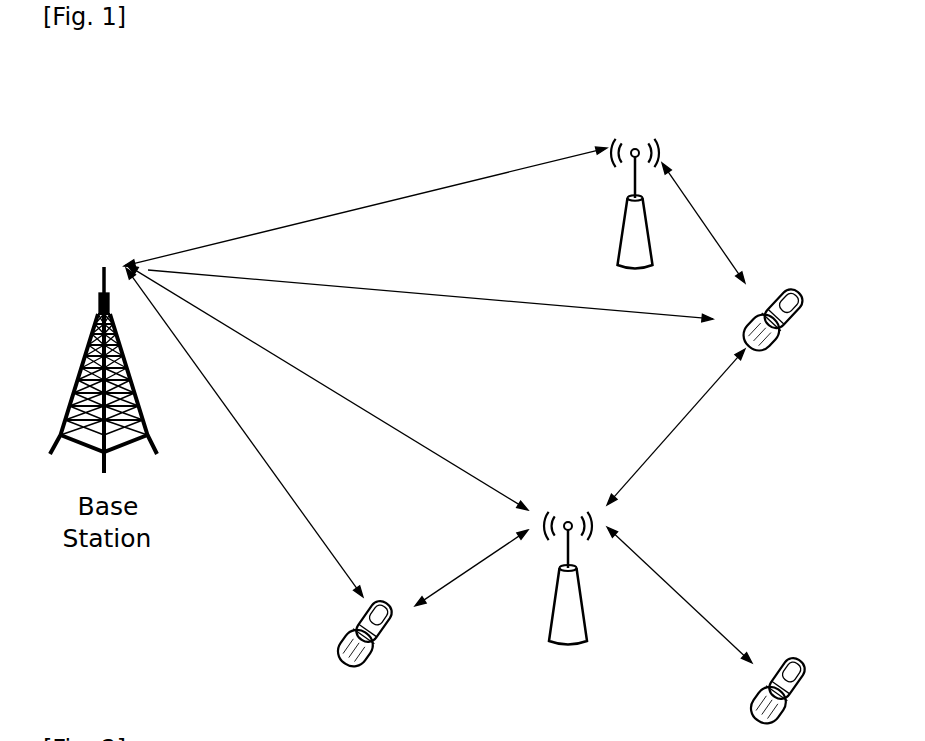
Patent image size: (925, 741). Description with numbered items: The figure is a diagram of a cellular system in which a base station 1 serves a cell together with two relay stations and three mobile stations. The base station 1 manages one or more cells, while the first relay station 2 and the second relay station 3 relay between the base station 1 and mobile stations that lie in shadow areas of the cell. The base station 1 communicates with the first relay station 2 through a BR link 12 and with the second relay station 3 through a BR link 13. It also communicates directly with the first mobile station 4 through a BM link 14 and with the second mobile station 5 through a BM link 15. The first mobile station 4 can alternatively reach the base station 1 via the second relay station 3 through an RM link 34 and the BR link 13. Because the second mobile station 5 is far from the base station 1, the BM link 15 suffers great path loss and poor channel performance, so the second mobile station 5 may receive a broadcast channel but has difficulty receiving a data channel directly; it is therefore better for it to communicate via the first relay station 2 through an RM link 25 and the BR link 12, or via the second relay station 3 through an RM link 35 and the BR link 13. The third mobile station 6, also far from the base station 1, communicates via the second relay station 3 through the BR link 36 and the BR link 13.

The base station 1 is at (104, 266).
The first relay station 2 is at (635, 137).
The second relay station 3 is at (569, 508).
The first mobile station 4 is at (384, 601).
The second mobile station 5 is at (788, 292).
The third mobile station 6 is at (794, 658).
The BR link 12 is at (313, 221).
The BR link 13 is at (445, 459).
The BM link 14 is at (297, 505).
The BM link 15 is at (533, 304).
The RM link 25 is at (705, 212).
The RM link 34 is at (473, 570).
The RM link 35 is at (672, 433).
The BR link 36 is at (705, 617).